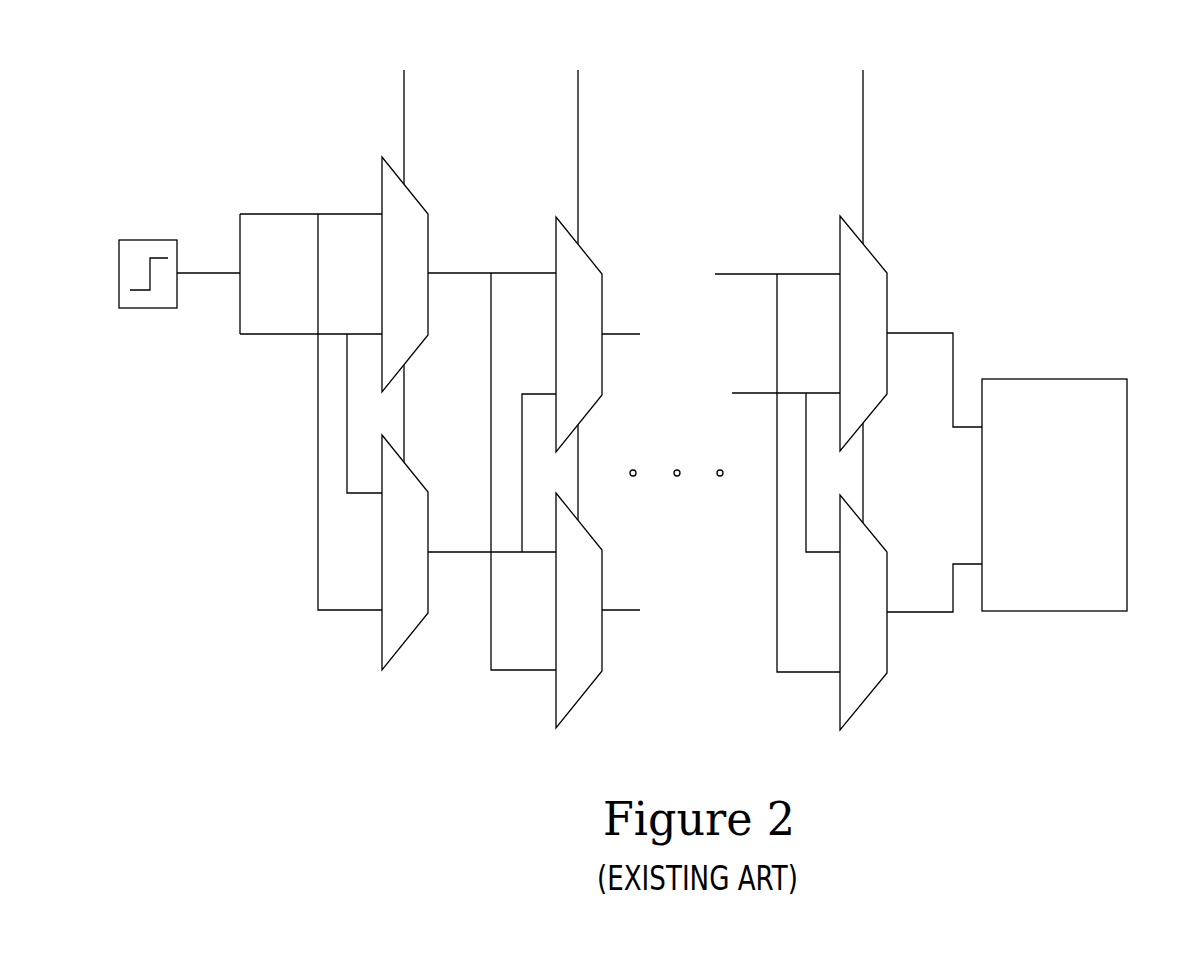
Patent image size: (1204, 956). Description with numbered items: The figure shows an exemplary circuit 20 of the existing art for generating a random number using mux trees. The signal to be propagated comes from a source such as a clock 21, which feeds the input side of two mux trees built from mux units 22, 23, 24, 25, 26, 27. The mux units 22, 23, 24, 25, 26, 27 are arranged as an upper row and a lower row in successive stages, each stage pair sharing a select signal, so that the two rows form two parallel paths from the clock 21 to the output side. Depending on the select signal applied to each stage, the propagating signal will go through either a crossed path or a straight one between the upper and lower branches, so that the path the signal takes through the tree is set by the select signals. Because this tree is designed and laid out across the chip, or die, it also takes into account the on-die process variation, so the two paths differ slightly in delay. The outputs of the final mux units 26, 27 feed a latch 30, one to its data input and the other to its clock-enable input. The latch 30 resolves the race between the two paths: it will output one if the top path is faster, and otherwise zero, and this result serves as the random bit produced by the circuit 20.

The circuit 20 is at (1193, 107).
The clock 21 is at (148, 240).
The mux unit 22 is at (430, 222).
The mux unit 23 is at (428, 510).
The mux unit 24 is at (602, 295).
The mux unit 25 is at (600, 580).
The mux unit 26 is at (888, 295).
The mux unit 27 is at (887, 575).
The latch 30 is at (1043, 379).